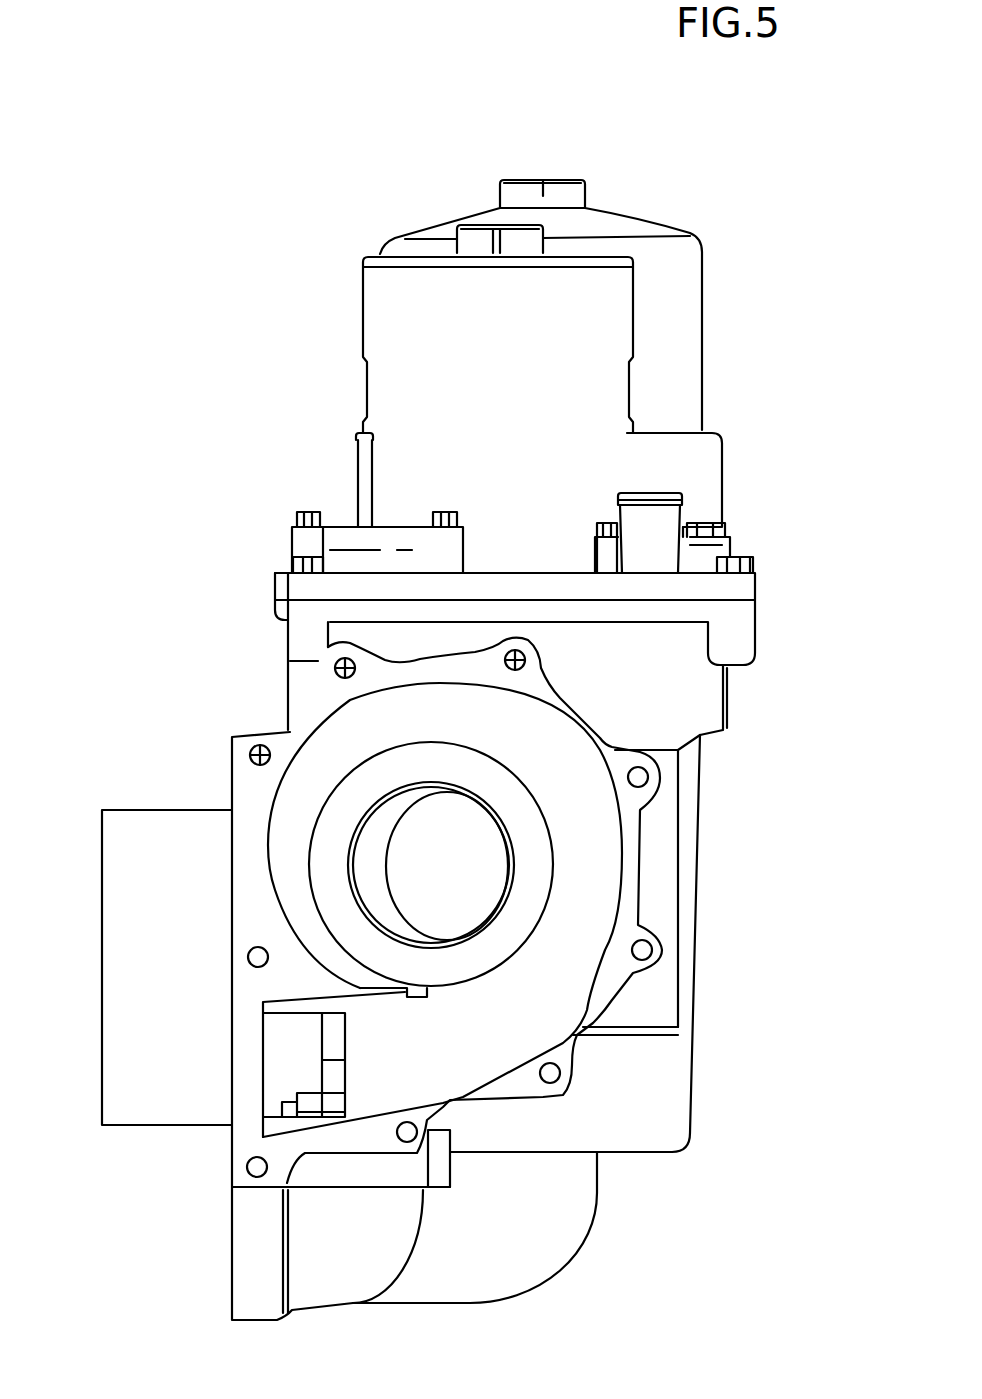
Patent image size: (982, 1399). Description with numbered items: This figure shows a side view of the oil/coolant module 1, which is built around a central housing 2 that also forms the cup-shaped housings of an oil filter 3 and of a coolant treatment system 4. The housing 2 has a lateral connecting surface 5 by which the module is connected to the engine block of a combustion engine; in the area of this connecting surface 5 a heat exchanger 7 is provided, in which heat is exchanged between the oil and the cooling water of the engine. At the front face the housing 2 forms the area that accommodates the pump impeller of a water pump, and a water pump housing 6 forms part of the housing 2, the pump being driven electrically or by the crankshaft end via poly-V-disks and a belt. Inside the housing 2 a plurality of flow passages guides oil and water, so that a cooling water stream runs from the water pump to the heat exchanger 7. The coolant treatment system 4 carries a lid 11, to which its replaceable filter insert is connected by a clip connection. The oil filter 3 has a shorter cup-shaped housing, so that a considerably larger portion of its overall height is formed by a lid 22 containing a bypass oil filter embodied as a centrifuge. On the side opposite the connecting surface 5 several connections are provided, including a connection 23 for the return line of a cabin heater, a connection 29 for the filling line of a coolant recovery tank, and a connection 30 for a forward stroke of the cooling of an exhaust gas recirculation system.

The oil/coolant module 1 is at (638, 1217).
The central housing 2 is at (687, 918).
The oil filter 3 is at (703, 497).
The coolant treatment system 4 is at (392, 372).
The lateral connecting surface 5 is at (230, 763).
The water pump housing 6 is at (573, 973).
The heat exchanger 7 is at (133, 840).
The lid of the coolant treatment system 11 is at (412, 263).
The lid of the oil filter 22 is at (682, 278).
The connection for the return line of a cabin heater 23 is at (723, 543).
The connection for the filling line of a coolant recovery tank 29 is at (653, 527).
The connection for a forward stroke of exhaust gas recirculation cooling 30 is at (340, 533).